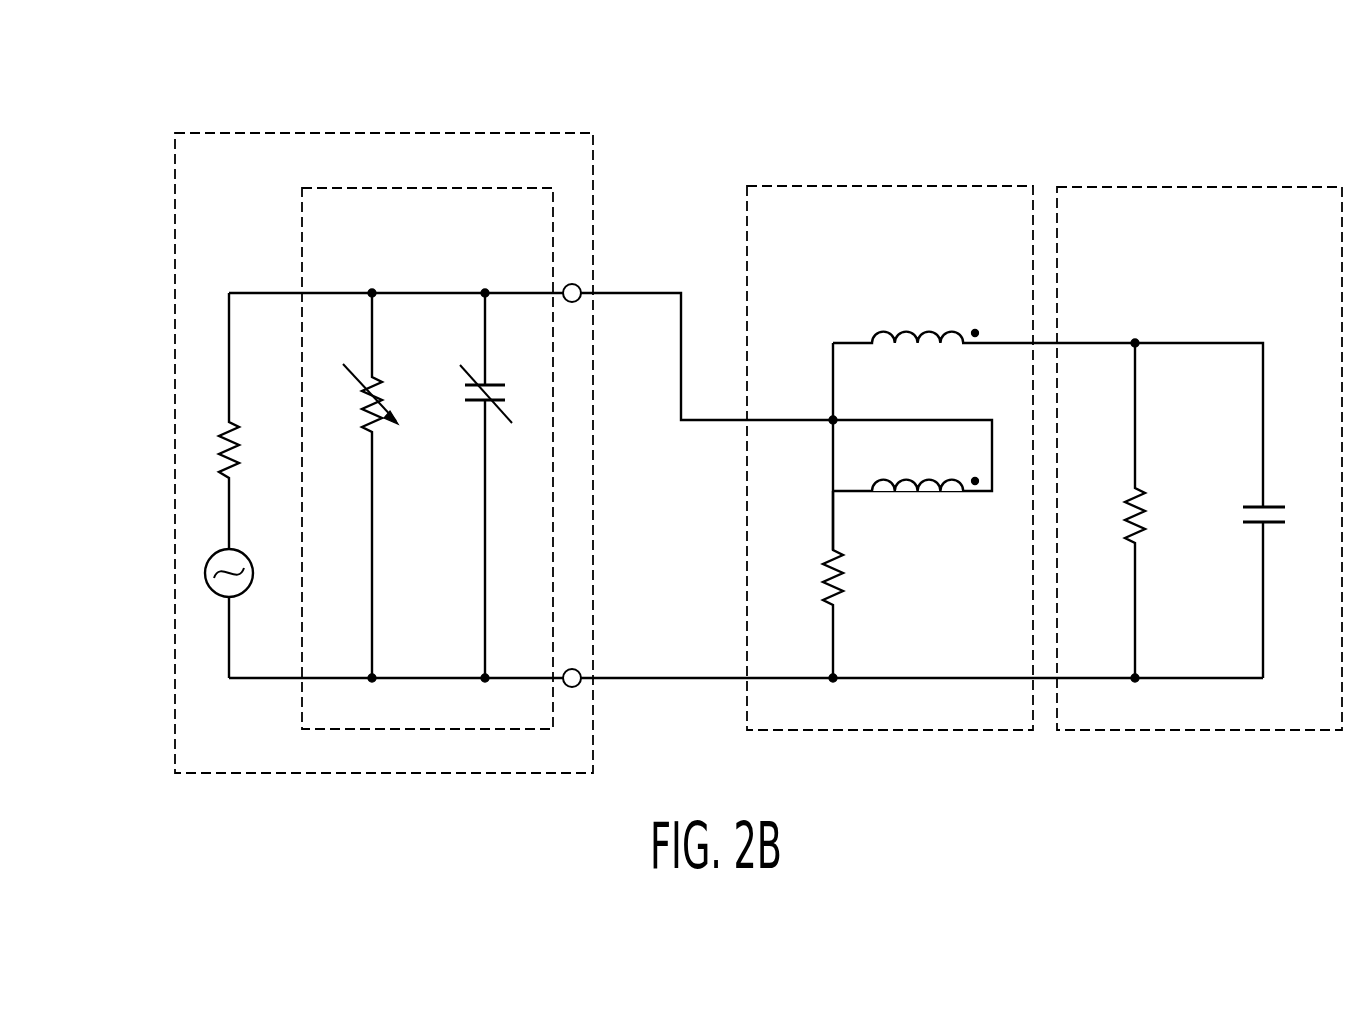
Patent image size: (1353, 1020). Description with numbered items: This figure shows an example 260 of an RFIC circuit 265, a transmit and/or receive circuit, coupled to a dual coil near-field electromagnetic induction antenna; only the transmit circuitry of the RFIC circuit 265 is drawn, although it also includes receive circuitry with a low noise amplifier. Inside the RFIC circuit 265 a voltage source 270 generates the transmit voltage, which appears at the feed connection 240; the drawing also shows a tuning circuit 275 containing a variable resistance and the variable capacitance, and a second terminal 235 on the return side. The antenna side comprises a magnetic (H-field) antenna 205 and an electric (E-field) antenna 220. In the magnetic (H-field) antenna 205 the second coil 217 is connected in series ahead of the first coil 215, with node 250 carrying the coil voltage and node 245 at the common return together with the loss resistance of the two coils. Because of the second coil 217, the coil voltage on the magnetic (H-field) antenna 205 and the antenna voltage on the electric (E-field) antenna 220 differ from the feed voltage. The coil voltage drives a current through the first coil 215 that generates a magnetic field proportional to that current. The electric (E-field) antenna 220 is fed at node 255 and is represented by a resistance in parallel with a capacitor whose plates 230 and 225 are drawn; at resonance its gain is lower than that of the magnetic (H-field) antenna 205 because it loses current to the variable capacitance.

The example 260 is at (137, 70).
The RFIC circuit 265 is at (175, 302).
The tuning circuit 275 is at (302, 263).
The voltage source 270 is at (240, 552).
The feed connection 240 is at (577, 303).
The RFIC ground terminal 235 is at (573, 669).
The magnetic (H-field) antenna 205 is at (941, 417).
The second coil 217 is at (872, 340).
The inductor L1 215 is at (973, 486).
The coil node 250 is at (832, 426).
The ground node 245 is at (838, 675).
The electric (E-field) antenna 220 is at (1199, 417).
The antenna node 255 is at (1135, 343).
The antenna capacitor top plate 230 is at (1278, 502).
The antenna capacitor bottom plate 225 is at (1272, 527).